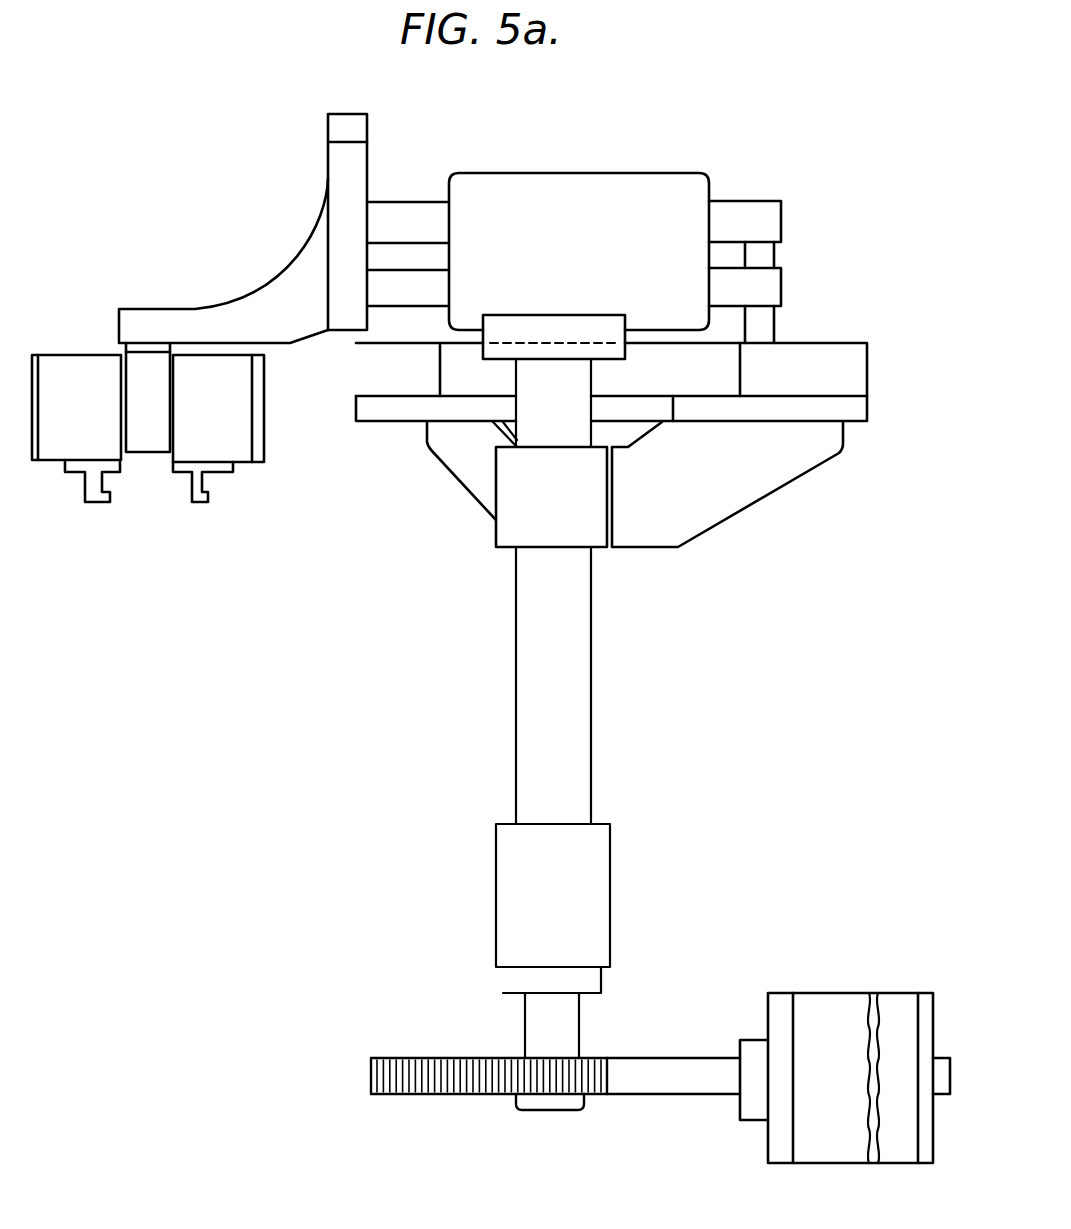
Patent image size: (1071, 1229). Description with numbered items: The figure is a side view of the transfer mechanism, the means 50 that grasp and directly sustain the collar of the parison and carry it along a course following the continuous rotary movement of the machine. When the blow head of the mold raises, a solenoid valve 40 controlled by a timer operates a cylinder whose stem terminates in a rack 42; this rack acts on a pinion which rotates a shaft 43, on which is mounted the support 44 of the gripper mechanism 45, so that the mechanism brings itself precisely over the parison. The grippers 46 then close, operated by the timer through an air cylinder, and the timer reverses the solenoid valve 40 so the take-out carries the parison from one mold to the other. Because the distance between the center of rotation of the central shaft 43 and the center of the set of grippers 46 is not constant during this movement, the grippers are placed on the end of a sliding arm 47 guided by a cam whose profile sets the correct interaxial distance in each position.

The solenoid valve 40 is at (840, 1005).
The rack 42 is at (516, 1064).
The shaft 43 is at (527, 743).
The support 44 is at (607, 190).
The gripper mechanism 45 is at (199, 280).
The grippers 46 is at (96, 496).
The sliding arm 47 is at (403, 210).
The transfer means 50 is at (413, 492).